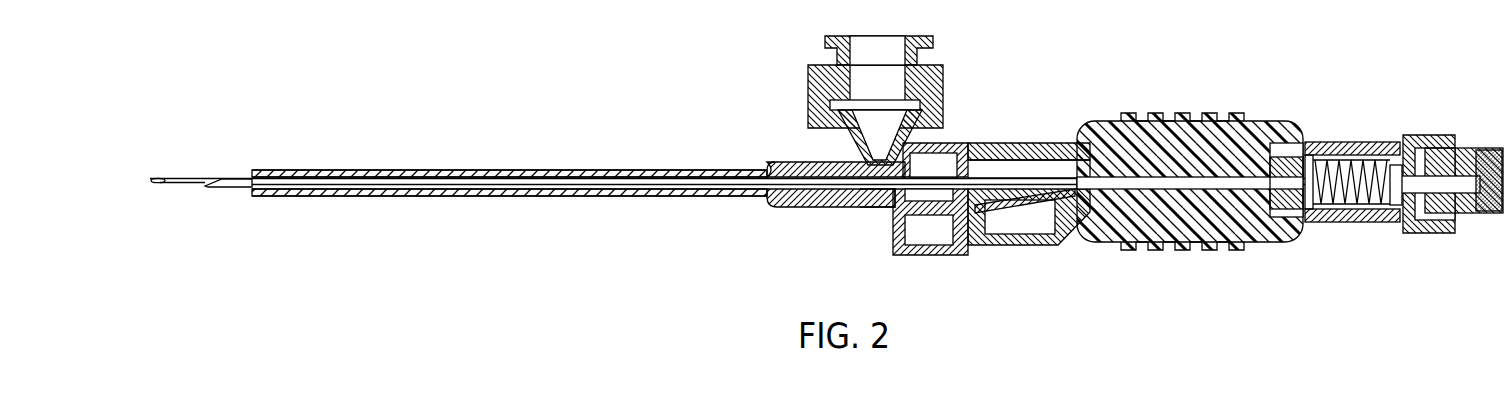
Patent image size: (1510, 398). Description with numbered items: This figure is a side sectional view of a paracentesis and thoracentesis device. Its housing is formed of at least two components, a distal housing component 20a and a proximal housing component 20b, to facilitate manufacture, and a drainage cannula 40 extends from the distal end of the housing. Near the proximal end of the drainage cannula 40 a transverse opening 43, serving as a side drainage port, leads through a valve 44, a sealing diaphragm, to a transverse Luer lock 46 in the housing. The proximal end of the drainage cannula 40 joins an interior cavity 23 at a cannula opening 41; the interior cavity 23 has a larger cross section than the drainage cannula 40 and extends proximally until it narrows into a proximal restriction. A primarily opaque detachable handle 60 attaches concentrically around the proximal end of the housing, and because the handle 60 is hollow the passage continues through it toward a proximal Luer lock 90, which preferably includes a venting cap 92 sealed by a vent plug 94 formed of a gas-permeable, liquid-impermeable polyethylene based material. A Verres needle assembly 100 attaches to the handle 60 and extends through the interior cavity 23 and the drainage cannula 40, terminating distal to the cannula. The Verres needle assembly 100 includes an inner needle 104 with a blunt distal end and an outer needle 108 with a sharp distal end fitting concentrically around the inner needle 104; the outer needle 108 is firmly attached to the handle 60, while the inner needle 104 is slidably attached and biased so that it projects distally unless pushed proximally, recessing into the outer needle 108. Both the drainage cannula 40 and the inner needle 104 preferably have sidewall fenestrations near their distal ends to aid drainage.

The Verres needle assembly 100 is at (217, 200).
The inner needle 104 is at (192, 178).
The outer needle 108 is at (238, 178).
The drainage cannula 40 is at (513, 196).
The cannula opening 41 is at (882, 197).
The transverse opening 43 is at (888, 138).
The valve 44 is at (870, 130).
The transverse Luer lock 46 is at (962, 82).
The distal housing component 20a is at (925, 250).
The proximal housing component 20b is at (1012, 243).
The interior cavity 23 is at (1053, 222).
The detachable handle 60 is at (1273, 120).
The vent plug 94 is at (1474, 145).
The proximal Luer lock 90 is at (1474, 122).
The venting cap 92 is at (1480, 213).